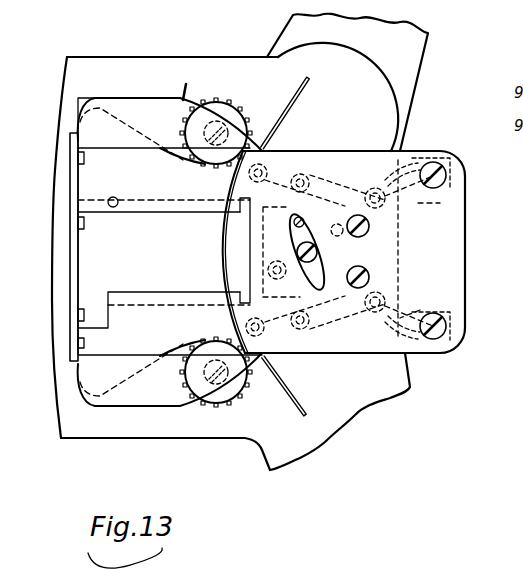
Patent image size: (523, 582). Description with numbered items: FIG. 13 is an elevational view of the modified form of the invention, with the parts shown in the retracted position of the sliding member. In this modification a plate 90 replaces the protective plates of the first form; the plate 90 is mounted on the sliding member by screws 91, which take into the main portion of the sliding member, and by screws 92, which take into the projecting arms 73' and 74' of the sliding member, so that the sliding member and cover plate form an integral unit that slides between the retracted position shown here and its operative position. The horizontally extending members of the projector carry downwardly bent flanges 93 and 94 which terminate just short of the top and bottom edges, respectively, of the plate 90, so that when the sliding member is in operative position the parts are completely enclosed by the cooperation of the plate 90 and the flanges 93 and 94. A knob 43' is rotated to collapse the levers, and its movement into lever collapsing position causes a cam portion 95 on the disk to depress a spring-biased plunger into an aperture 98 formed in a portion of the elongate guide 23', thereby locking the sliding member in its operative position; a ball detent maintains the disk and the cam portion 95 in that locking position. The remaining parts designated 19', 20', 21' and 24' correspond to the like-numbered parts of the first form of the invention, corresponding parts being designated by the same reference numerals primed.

The upper sprocket gear 19' is at (216, 90).
The lower sprocket gear 20' is at (216, 403).
The housing 21' is at (223, 242).
The elongate guide 23' is at (170, 226).
The lower compartment 24' is at (164, 312).
The knob 43' is at (253, 252).
The projecting arm 73' is at (460, 205).
The projecting arm 74' is at (450, 300).
The plate 90 is at (452, 248).
The screws 91 is at (370, 232).
The screws 92 is at (447, 176).
The downwardly bent flange 93 is at (128, 108).
The downwardly bent flange 94 is at (138, 395).
The cam portion 95 is at (522, 152).
The aperture 98 is at (114, 197).